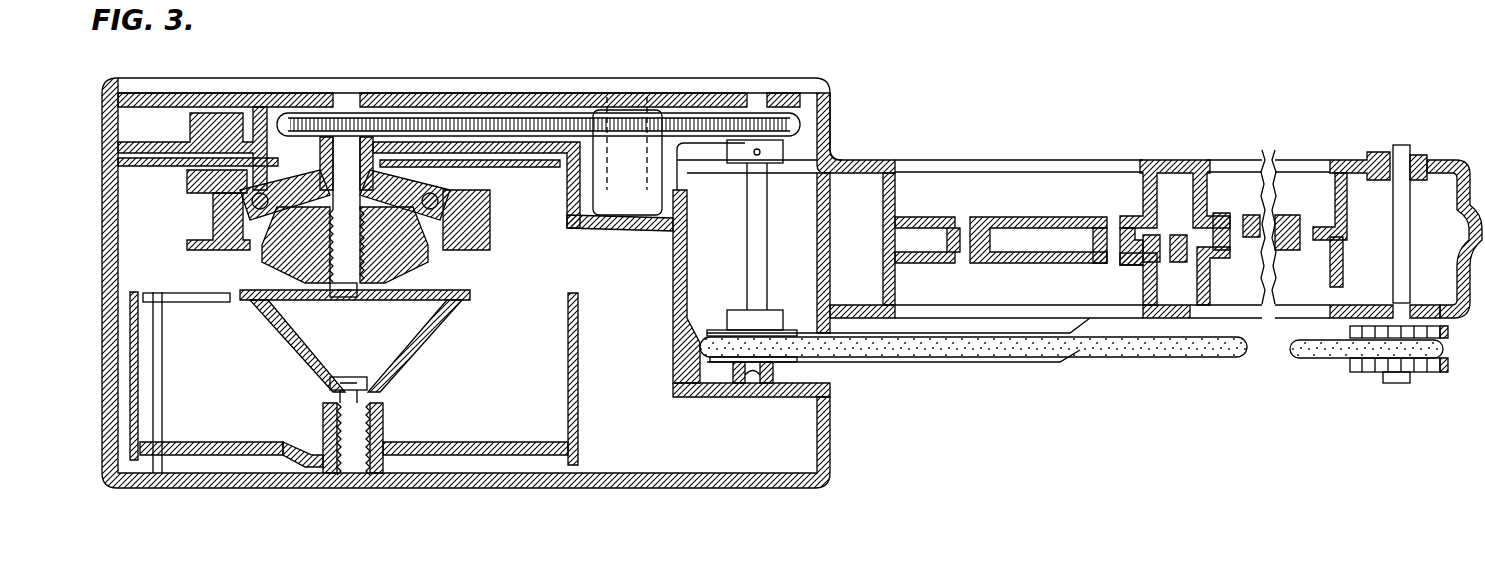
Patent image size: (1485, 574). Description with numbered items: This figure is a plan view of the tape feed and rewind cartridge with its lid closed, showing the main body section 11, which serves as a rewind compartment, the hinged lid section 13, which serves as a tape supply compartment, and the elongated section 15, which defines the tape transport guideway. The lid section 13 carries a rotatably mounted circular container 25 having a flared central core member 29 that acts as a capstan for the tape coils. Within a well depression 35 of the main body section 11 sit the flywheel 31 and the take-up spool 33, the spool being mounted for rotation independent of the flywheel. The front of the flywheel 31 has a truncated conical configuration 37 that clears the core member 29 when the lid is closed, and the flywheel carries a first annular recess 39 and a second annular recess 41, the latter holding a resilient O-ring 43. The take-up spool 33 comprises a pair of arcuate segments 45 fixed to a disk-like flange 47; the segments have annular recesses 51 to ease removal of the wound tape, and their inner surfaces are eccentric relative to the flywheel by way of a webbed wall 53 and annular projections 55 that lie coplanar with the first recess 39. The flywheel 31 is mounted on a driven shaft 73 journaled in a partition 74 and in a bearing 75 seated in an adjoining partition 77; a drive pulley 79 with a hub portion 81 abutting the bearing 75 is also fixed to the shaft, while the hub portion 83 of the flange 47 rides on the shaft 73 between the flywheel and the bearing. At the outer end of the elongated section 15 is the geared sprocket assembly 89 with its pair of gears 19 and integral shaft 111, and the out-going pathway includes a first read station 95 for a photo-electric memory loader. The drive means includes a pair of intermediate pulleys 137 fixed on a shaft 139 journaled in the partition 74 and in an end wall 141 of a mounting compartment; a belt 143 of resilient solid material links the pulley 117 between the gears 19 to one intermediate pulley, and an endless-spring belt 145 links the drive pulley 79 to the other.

The main body section 11 is at (676, 60).
The hinged lid section 13 is at (127, 493).
The elongated section 15 is at (1293, 142).
The pair of gears 19 is at (1448, 366).
The circular container 25 is at (582, 420).
The flared central core member 29 is at (405, 354).
The flywheel 31 is at (400, 290).
The take-up spool 33 is at (508, 199).
The well depression 35 is at (572, 228).
The truncated conical configuration 37 is at (268, 292).
The first annular recess 39 is at (275, 235).
The second annular recess 41 is at (318, 285).
The resilient O-ring 43 is at (250, 193).
The arcuate segments 45 is at (186, 201).
The disk-like flange 47 is at (548, 163).
The annular recesses 51 is at (210, 222).
The webbed wall 53 is at (258, 187).
The annular projection 55 is at (232, 248).
The driven shaft 73 is at (398, 110).
The partition 74 is at (372, 97).
The bearing 75 is at (490, 190).
The adjoining partition 77 is at (312, 110).
The drive pulley 79 is at (408, 145).
The hub portion 81 is at (380, 157).
The hub portion 83 is at (423, 252).
The geared sprocket assembly 89 is at (1429, 188).
The first read station 95 is at (1176, 213).
The shaft 111 is at (1398, 385).
The pulley 117 is at (1340, 355).
The intermediate pulleys 137 is at (770, 167).
The shaft 139 is at (767, 232).
The end wall 141 is at (742, 393).
The belt 143 is at (1290, 348).
The belt 145 is at (512, 120).